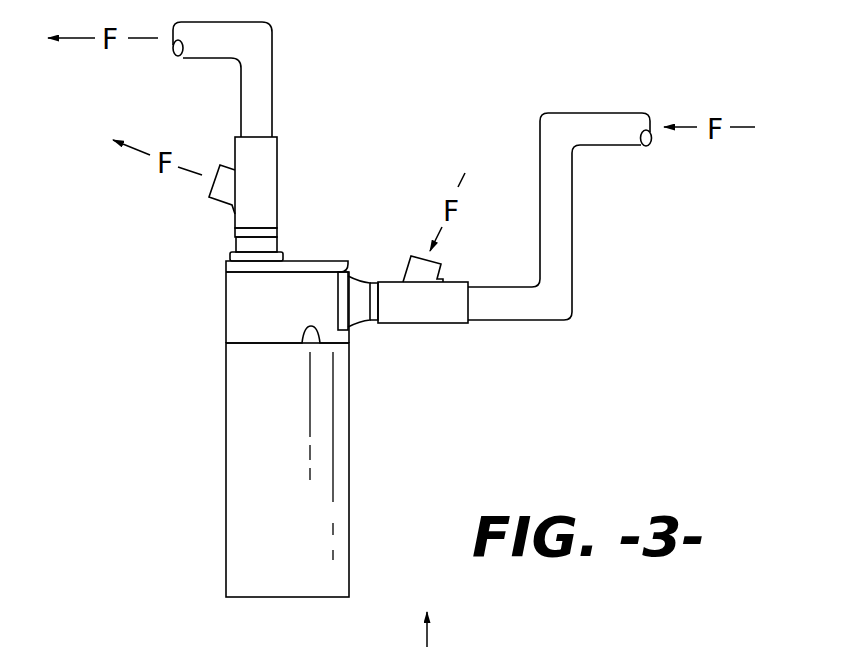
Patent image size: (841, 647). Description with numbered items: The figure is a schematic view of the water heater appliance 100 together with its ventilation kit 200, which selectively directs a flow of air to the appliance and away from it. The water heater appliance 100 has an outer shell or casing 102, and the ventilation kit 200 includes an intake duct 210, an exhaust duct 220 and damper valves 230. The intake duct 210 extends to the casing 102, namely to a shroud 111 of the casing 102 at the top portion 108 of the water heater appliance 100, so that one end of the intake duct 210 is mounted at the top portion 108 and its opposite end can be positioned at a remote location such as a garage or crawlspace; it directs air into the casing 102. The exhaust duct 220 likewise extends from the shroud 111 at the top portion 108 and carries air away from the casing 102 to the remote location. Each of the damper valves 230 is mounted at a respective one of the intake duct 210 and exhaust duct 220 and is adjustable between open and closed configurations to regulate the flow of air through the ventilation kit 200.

The water heater appliance 100 is at (205, 497).
The casing 102 is at (349, 472).
The top portion 108 is at (219, 273).
The shroud 111 is at (315, 282).
The ventilation kit 200 is at (612, 98).
The intake duct 210 is at (572, 260).
The exhaust duct 220 is at (273, 81).
The damper valves 230 is at (277, 164).